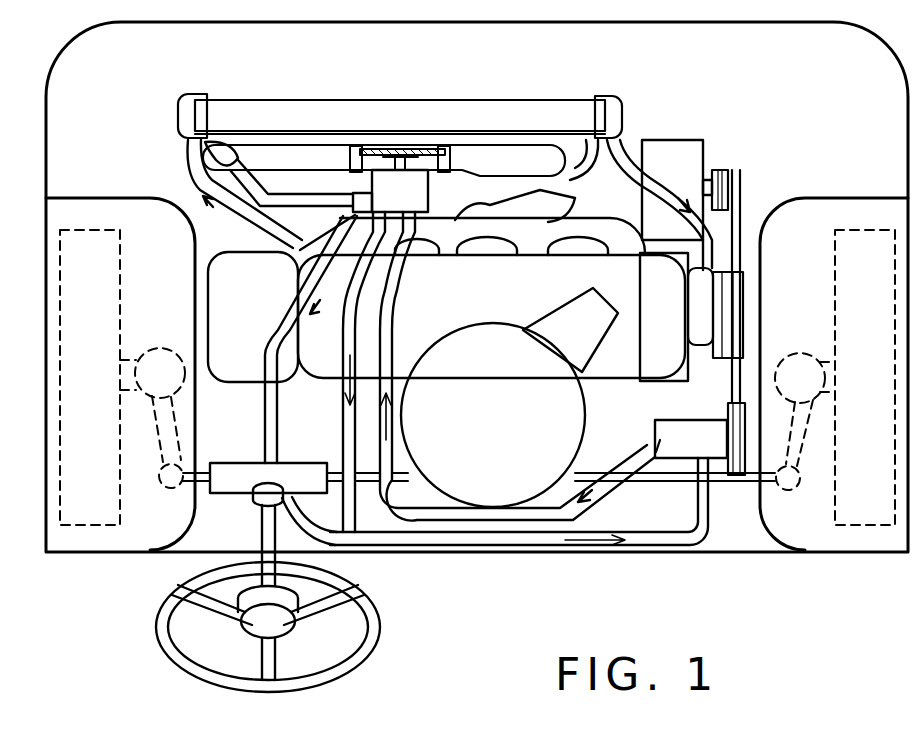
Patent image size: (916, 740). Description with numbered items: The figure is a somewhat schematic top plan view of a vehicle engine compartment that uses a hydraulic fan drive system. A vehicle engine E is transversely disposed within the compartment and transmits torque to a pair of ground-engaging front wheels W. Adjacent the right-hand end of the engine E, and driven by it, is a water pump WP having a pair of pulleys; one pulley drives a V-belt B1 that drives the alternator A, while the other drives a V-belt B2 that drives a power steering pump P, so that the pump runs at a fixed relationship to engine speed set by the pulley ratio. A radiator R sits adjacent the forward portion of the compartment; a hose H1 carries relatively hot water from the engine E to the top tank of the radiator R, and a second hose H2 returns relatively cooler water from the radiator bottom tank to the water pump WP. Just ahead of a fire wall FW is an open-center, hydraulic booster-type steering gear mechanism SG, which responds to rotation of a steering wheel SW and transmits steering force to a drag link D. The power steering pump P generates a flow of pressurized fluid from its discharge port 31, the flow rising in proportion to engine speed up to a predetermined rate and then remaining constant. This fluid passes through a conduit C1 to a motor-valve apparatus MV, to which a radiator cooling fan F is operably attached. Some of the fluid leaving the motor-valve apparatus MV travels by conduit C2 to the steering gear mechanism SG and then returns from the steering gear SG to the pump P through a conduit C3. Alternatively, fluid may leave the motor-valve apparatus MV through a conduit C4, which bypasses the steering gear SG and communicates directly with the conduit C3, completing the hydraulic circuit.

The radiator R is at (298, 113).
The radiator cooling fan F is at (485, 160).
The motor-valve apparatus MV is at (428, 193).
The hose H1 is at (262, 220).
The second hose H2 is at (648, 194).
The alternator A is at (680, 160).
The V-belt B1 is at (722, 228).
The V-belt B2 is at (735, 383).
The front wheels W is at (100, 292).
The vehicle engine E is at (448, 348).
The water pump WP is at (700, 320).
The power steering pump P is at (680, 436).
The discharge port 31 is at (650, 448).
The conduit C1 is at (388, 356).
The conduit C2 is at (270, 345).
The conduit C3 is at (490, 538).
The conduit C4 is at (345, 424).
The drag link D is at (685, 480).
The fire wall FW is at (664, 552).
The steering gear mechanism SG is at (240, 468).
The steering wheel SW is at (170, 605).